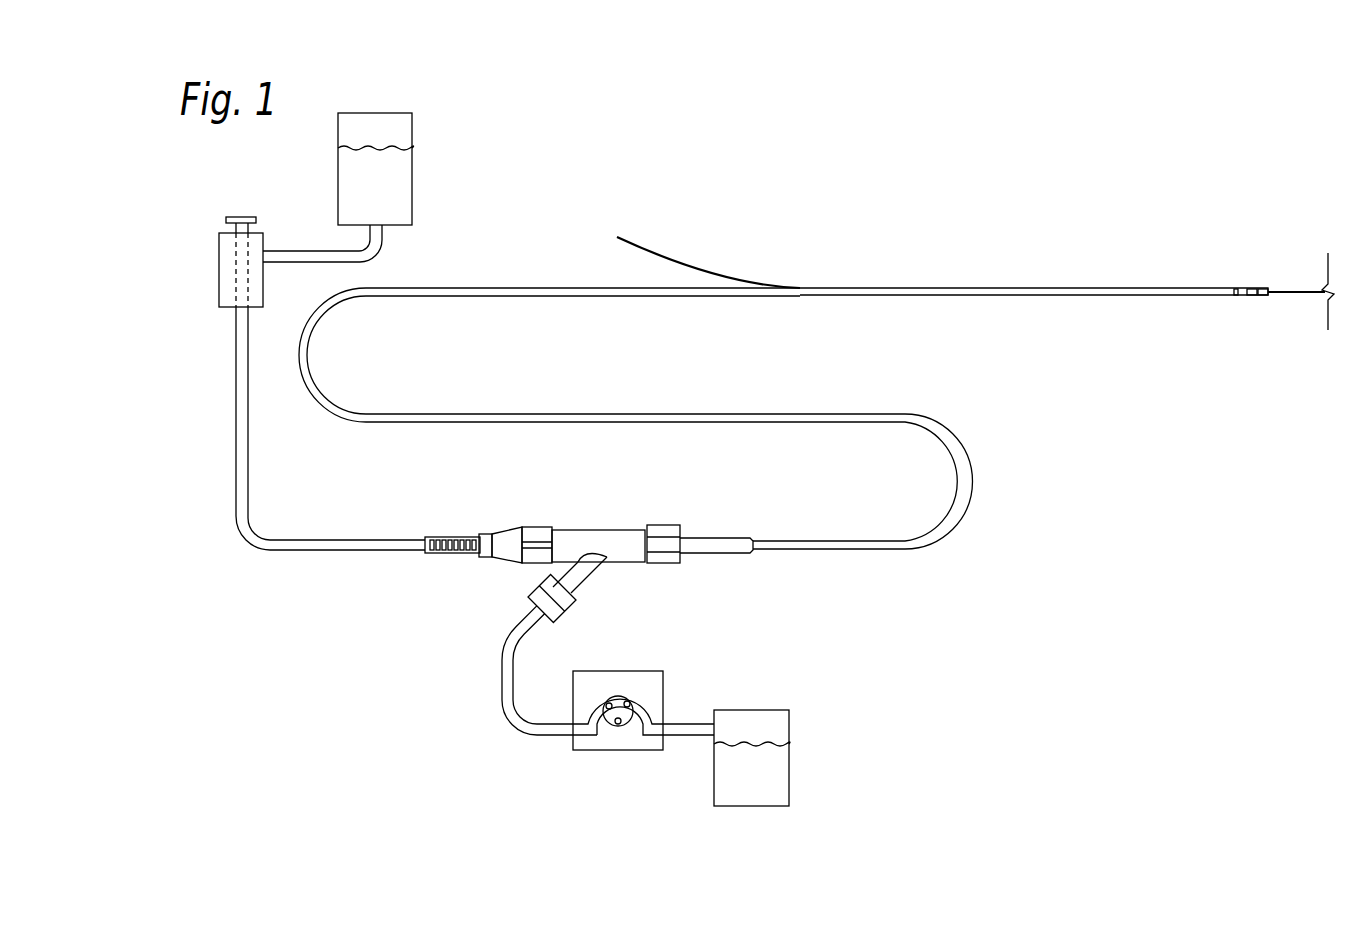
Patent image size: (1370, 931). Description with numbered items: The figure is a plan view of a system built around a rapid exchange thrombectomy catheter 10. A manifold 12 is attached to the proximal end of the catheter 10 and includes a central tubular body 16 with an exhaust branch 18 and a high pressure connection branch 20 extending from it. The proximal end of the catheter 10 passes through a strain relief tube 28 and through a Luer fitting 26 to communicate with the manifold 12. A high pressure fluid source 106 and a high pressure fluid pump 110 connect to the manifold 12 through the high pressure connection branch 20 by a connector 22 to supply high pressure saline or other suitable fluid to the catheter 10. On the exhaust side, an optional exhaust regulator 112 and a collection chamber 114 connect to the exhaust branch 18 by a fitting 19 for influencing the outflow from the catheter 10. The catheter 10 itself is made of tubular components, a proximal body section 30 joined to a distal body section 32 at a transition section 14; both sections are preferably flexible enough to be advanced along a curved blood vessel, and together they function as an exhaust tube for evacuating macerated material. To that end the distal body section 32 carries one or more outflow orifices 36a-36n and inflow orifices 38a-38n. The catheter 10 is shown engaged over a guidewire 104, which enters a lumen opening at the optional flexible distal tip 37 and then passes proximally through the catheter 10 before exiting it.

The catheter 10 is at (867, 162).
The manifold 12 is at (582, 520).
The transition section 14 is at (818, 298).
The central tubular body 16 is at (608, 530).
The exhaust branch 18 is at (590, 568).
The fitting 19 is at (528, 597).
The high pressure connection branch 20 is at (442, 535).
The connector 22 is at (535, 525).
The Luer fitting 26 is at (672, 563).
The strain relief tube 28 is at (730, 538).
The proximal body section 30 is at (527, 287).
The distal body section 32 is at (1038, 288).
The outflow orifices 36a-36n is at (1235, 290).
The distal tip 37 is at (1268, 296).
The inflow orifices 38a-38n is at (1252, 296).
The guidewire 104 is at (665, 258).
The high pressure fluid source 106 is at (413, 168).
The high pressure fluid pump 110 is at (265, 227).
The exhaust regulator 112 is at (647, 671).
The collection chamber 114 is at (790, 757).